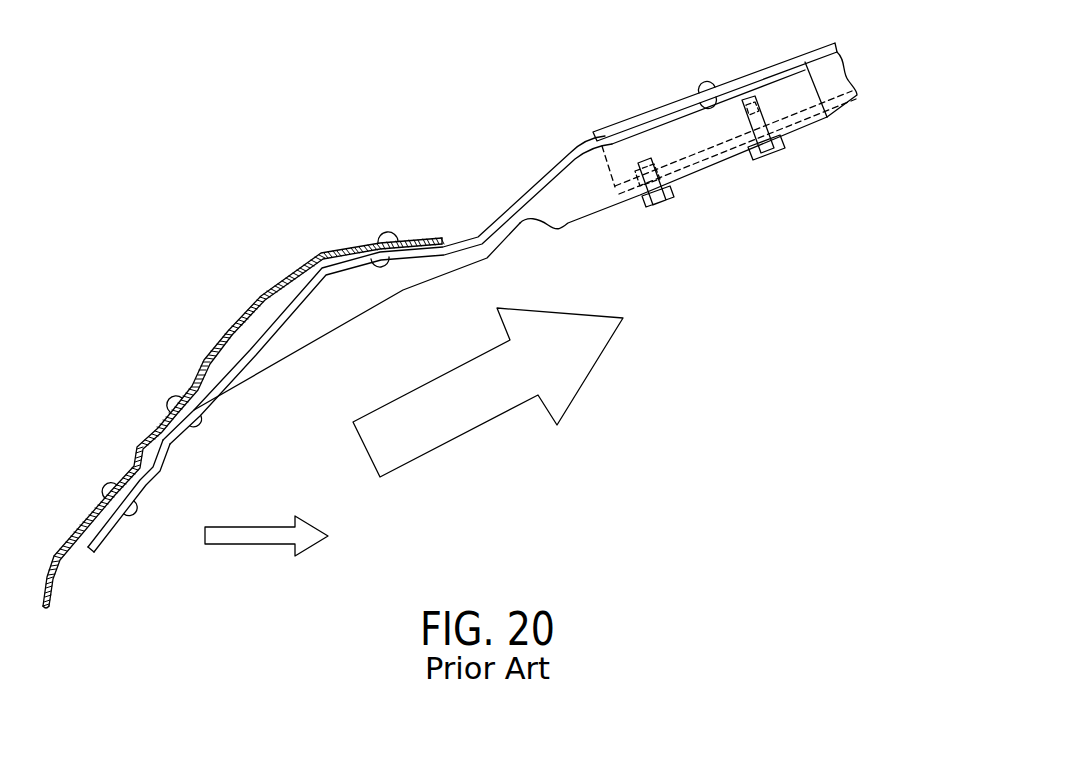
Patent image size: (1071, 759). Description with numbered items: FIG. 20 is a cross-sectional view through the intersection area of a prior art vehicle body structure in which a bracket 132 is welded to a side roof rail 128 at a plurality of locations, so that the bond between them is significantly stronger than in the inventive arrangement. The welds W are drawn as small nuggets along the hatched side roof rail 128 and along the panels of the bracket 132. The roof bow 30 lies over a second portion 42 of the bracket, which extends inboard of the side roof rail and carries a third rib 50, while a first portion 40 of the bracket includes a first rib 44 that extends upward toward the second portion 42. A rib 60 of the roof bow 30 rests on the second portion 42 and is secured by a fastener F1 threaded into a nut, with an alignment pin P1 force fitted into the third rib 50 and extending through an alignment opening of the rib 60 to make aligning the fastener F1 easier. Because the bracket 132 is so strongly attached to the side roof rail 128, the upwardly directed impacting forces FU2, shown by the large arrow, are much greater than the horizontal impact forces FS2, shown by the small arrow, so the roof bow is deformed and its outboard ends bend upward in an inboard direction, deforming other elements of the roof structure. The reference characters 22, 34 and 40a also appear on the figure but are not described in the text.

The vehicle roof structure 22 is at (335, 195).
The roof bow 30 is at (766, 58).
The second portion 42 is at (672, 138).
The rib 60 is at (833, 83).
The third rib 50 is at (572, 195).
The first rib 44 is at (302, 318).
The bracket 132 is at (412, 300).
The glass panel 34 is at (222, 343).
The first portion 40 is at (158, 457).
The side outer panel flange 40a is at (98, 540).
The side roof rail 128 is at (229, 314).
The welds W is at (382, 236).
The fasteners F1 is at (660, 194).
The alignment pin P1 is at (768, 157).
The upwardly directed impacting forces FU2 is at (472, 430).
The horizontal impact forces FS2 is at (248, 543).